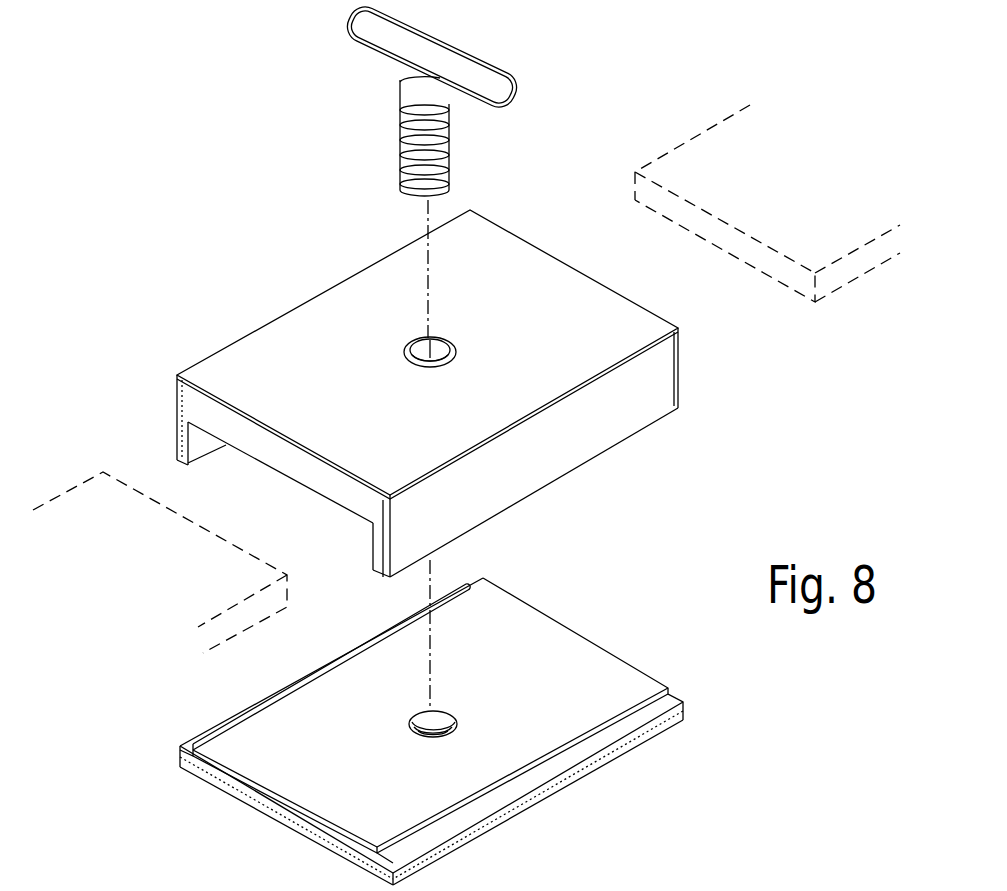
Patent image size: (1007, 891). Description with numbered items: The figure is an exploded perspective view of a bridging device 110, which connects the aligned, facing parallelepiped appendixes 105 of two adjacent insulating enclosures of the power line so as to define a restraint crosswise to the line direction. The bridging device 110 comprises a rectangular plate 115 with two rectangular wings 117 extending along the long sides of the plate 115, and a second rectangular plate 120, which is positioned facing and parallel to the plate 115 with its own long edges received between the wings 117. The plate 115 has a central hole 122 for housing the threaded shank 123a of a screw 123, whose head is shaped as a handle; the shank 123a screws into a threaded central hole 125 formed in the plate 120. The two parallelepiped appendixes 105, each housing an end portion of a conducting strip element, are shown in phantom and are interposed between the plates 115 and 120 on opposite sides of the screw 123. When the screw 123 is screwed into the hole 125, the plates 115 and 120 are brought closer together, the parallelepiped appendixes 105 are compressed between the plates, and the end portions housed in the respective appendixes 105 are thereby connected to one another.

The bridging device 110 is at (671, 53).
The screw 123 is at (510, 61).
The threaded shank 123a is at (452, 168).
The rectangular plate 115 is at (262, 316).
The central hole 122 is at (464, 347).
The rectangular wings 117 is at (170, 440).
The rectangular plate 120 is at (281, 831).
The threaded central hole 125 is at (460, 722).
The pocket (parallelepiped appendix) 105 is at (700, 214).